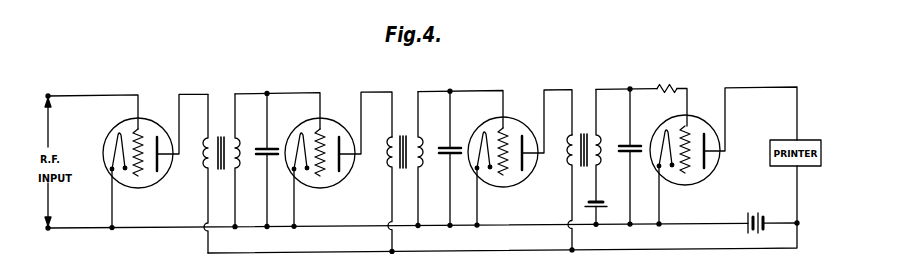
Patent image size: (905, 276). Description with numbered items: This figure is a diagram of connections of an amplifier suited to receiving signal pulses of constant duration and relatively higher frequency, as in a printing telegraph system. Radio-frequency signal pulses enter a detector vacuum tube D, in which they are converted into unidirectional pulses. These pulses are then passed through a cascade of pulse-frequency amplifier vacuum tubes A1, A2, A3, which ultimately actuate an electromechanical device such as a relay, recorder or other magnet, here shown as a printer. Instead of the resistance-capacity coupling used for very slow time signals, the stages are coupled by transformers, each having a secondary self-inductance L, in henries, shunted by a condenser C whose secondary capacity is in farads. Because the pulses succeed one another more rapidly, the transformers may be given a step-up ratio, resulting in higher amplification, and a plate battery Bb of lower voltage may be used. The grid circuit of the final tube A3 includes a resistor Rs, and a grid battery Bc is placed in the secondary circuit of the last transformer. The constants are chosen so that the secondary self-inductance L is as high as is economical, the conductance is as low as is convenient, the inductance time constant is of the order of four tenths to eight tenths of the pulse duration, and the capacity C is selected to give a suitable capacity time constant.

The detector vacuum tube D is at (118, 121).
The pulse-frequency amplifier vacuum tube A1 is at (297, 126).
The pulse-frequency amplifier vacuum tube A2 is at (497, 118).
The pulse-frequency amplifier vacuum tube A3 is at (675, 121).
The secondary self-inductance L is at (423, 158).
The condenser C is at (450, 159).
The grid leak resistance Rs is at (673, 82).
The grid bias battery Bc is at (602, 214).
The plate battery Bb is at (768, 216).